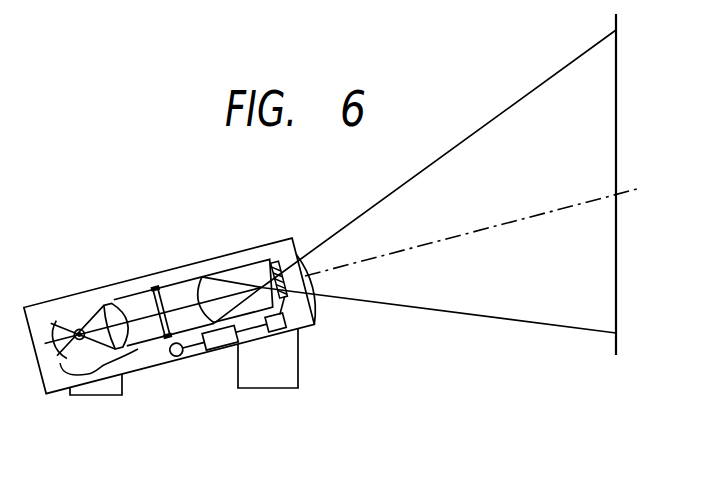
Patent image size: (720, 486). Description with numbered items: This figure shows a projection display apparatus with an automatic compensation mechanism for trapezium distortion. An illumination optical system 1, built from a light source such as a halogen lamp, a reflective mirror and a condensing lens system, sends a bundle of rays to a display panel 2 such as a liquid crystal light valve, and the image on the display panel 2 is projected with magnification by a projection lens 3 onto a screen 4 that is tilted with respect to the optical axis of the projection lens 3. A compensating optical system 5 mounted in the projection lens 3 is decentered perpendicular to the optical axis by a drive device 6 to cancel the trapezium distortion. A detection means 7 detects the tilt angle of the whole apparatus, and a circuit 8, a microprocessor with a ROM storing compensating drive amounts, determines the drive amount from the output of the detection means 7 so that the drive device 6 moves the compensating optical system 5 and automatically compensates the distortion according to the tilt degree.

The illumination optical system 1 is at (98, 368).
The display panel 2 is at (158, 288).
The projection lens 3 is at (283, 252).
The screen 4 is at (616, 113).
The compensating optical system 5 is at (273, 266).
The drive device 6 is at (277, 333).
The detection means 7 is at (176, 357).
The circuit 8 is at (218, 349).